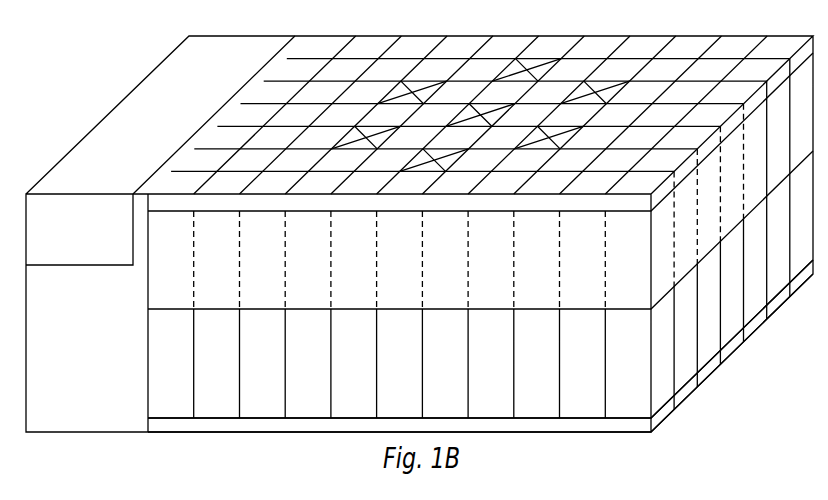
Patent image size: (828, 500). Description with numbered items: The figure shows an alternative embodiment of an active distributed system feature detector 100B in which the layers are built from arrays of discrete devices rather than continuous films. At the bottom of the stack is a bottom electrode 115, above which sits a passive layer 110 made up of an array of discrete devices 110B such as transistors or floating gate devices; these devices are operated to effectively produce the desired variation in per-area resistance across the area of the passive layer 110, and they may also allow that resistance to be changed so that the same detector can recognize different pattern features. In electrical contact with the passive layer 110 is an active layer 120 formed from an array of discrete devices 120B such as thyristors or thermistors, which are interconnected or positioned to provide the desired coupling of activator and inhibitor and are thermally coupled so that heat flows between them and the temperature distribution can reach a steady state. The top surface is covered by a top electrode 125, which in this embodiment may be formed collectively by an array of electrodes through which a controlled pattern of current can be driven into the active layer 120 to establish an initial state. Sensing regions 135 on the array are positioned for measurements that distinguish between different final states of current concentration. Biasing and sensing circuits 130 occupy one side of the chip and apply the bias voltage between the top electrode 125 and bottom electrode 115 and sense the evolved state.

The feature detector 100B is at (68, 97).
The biasing and sensing circuits 130 is at (137, 154).
The top electrode 125 is at (710, 75).
The sensing regions 135 is at (530, 72).
The active layer 120 is at (147, 278).
The passive layer 110 is at (147, 355).
The bottom electrode 115 is at (734, 342).
The discrete devices 120B is at (190, 285).
The discrete devices 110B is at (190, 386).